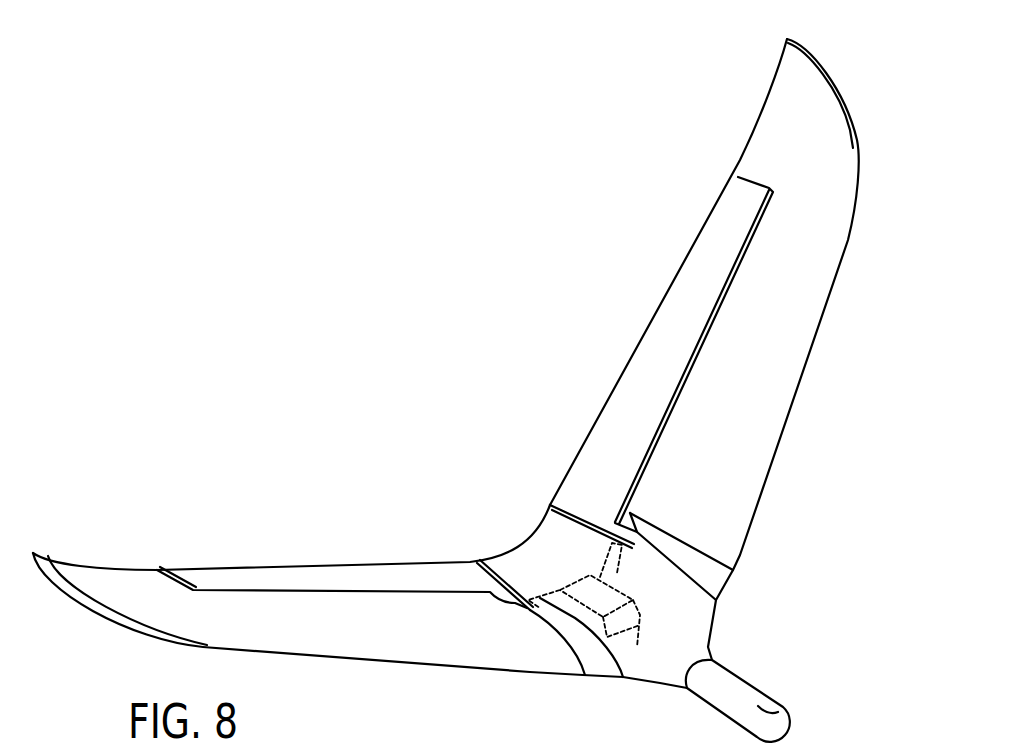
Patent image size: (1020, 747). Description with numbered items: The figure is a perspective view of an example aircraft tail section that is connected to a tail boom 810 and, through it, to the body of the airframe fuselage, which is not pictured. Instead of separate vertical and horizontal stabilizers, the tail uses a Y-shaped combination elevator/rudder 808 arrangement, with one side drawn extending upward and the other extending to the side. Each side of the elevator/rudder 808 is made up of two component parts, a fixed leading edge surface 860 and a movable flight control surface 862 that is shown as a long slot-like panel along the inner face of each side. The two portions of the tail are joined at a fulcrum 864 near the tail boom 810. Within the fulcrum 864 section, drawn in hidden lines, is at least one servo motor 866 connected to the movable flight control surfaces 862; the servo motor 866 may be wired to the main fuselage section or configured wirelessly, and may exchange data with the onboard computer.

The elevator/rudder 808 is at (700, 52).
The fixed leading edge surface 860 is at (772, 402).
The movable flight control surface 862 is at (657, 338).
The fulcrum 864 is at (548, 543).
The servo motor 866 is at (671, 607).
The tail boom 810 is at (788, 715).